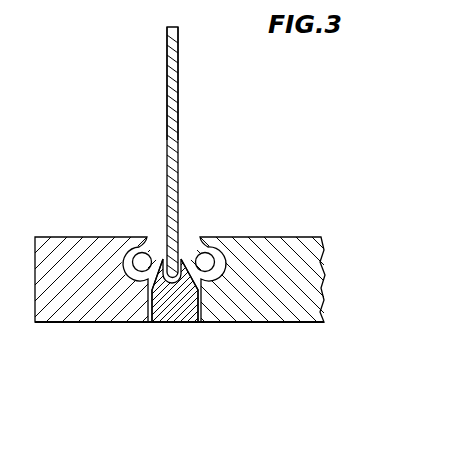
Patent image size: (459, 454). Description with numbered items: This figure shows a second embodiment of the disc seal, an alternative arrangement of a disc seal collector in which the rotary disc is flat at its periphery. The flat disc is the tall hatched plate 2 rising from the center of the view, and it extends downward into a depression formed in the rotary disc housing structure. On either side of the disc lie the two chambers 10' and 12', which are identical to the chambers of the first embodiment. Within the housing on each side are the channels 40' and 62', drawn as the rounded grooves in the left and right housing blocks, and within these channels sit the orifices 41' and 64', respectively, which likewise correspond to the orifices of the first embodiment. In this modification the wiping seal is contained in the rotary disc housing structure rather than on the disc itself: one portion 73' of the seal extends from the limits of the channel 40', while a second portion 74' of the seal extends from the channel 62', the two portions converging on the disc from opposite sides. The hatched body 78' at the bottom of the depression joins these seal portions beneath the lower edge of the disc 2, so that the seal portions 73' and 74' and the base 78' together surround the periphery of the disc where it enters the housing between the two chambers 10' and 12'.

The blade / panel 2 is at (179, 133).
The chamber 10' is at (148, 83).
The chamber 12' is at (200, 83).
The channel 40' is at (113, 303).
The channel 62' is at (258, 301).
The orifice 41' is at (126, 230).
The orifice 64' is at (230, 230).
The portion of the seal 73' is at (135, 314).
The second portion of the seal 74' is at (216, 314).
The wedge base 78' is at (173, 314).